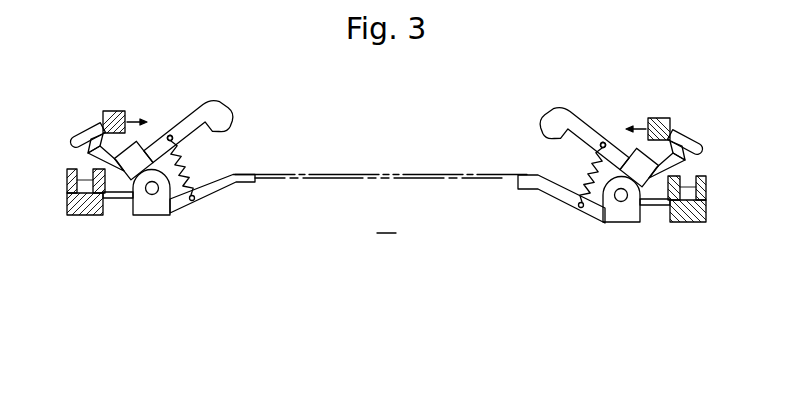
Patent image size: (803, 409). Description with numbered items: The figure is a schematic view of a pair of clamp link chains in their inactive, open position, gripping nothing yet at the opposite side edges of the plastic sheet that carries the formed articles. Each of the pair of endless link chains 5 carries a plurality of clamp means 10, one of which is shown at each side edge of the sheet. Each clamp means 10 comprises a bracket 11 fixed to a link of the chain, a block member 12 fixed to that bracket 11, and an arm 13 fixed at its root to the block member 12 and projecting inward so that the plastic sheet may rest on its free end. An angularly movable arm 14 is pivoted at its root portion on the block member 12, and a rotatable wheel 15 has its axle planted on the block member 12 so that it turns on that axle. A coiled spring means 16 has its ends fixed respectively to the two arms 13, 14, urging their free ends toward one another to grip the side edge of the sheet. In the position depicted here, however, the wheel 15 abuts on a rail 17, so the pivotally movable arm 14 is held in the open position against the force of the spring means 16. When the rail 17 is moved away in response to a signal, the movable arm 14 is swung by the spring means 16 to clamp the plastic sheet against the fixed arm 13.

The clamp means 10 is at (386, 167).
The endless link chain 5 is at (84, 204).
The bracket 11 is at (112, 198).
The block member 12 is at (158, 208).
The arm 13 is at (216, 191).
The angularly movable arm 14 is at (188, 124).
The rotatable wheel 15 is at (80, 139).
The coiled spring means 16 is at (188, 176).
The rail 17 is at (114, 110).